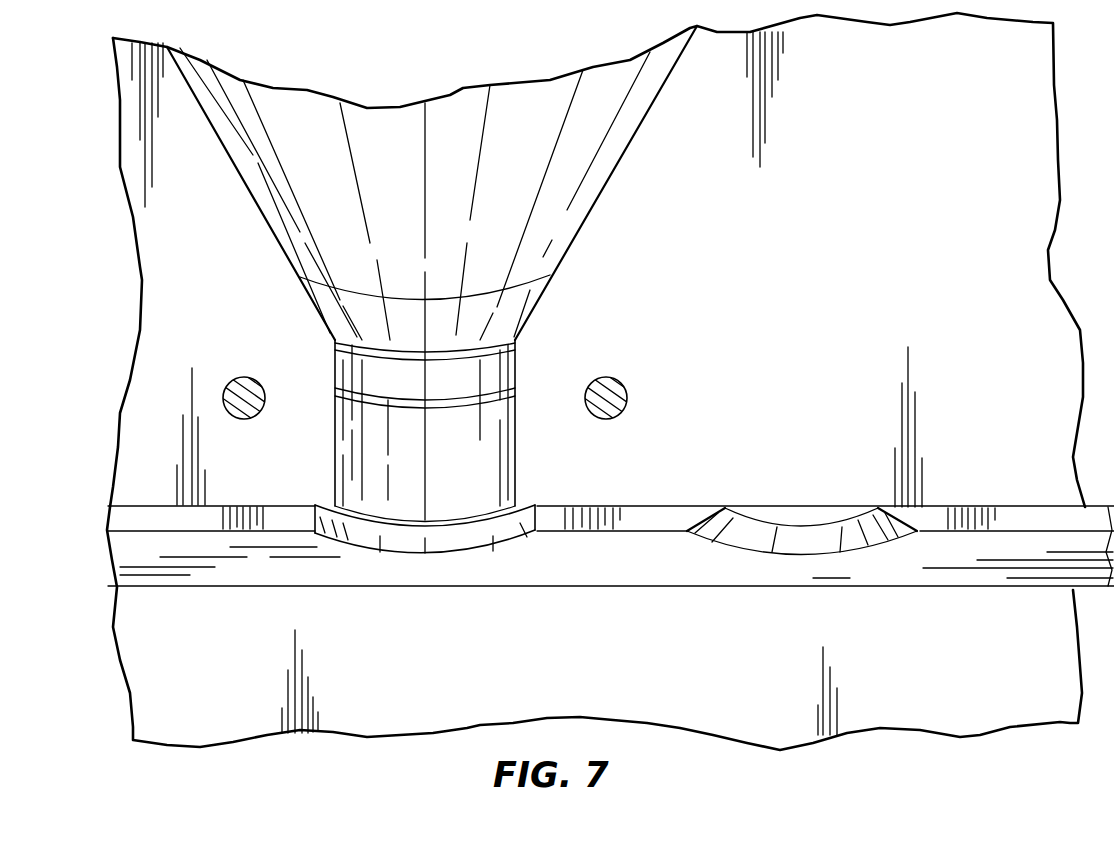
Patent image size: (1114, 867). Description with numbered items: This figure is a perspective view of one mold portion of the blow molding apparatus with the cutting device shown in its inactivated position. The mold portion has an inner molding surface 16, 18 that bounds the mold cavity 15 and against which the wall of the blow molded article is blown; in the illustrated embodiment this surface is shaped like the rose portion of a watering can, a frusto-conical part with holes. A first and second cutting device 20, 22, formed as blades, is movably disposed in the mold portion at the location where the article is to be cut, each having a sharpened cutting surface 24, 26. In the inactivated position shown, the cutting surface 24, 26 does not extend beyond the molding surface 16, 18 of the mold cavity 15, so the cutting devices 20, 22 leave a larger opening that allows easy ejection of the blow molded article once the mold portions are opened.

The mold cavity 15 is at (433, 453).
The inner molding surface 16 is at (481, 423).
The inner molding surface 18 is at (493, 468).
The first cutting device 20 is at (444, 567).
The second cutting device 22 is at (502, 552).
The sharpened cutting surface 24 is at (417, 568).
The sharpened cutting surface 26 is at (347, 520).